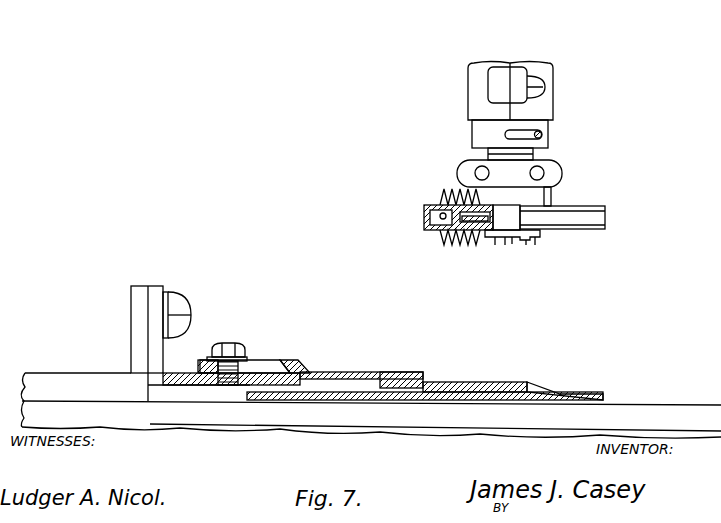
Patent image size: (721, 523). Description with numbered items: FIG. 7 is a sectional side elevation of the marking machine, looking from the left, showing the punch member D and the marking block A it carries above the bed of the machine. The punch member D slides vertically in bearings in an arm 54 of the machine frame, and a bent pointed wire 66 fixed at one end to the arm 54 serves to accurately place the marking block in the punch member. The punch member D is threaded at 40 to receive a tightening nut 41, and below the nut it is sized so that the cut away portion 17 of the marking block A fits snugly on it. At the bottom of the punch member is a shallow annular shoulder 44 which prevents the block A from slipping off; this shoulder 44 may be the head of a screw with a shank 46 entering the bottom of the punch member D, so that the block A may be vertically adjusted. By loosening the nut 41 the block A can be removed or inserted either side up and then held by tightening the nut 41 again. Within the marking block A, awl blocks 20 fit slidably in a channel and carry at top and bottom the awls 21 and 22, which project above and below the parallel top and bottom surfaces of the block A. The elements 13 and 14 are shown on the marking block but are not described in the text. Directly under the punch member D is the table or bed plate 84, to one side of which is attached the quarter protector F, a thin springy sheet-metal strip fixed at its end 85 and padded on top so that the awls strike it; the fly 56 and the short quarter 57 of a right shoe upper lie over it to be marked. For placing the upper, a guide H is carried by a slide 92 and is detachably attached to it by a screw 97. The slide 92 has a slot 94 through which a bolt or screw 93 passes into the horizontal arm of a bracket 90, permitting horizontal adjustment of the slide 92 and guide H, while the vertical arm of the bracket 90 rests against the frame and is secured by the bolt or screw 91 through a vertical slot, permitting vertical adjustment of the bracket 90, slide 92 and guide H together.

The arm of the frame 54 is at (522, 63).
The bent pointed wire 66 is at (523, 133).
The punch member D is at (503, 153).
The threaded portion 40 is at (537, 153).
The tightening nut 41 is at (562, 170).
The bar 13 is at (573, 206).
The lower edge of bar 14 is at (605, 228).
The marking block A is at (607, 215).
The awl blocks 20 is at (424, 213).
The awl 21 is at (444, 190).
The awl 22 is at (446, 242).
The shank 46 is at (505, 218).
The annular shoulder 44 is at (522, 238).
The cut away portion 17 is at (527, 218).
The table or bed plate 84 is at (227, 414).
The bracket 90 is at (155, 328).
The bolt or screw 91 is at (176, 300).
The slide 92 is at (292, 362).
The slot 94 is at (258, 362).
The bolt or screw 93 is at (240, 348).
The guide H is at (388, 372).
The screw 97 is at (400, 380).
The fly 56 is at (530, 390).
The short quarter 57 is at (333, 400).
The fixed end 85 is at (433, 402).
The quarter protector F is at (480, 405).